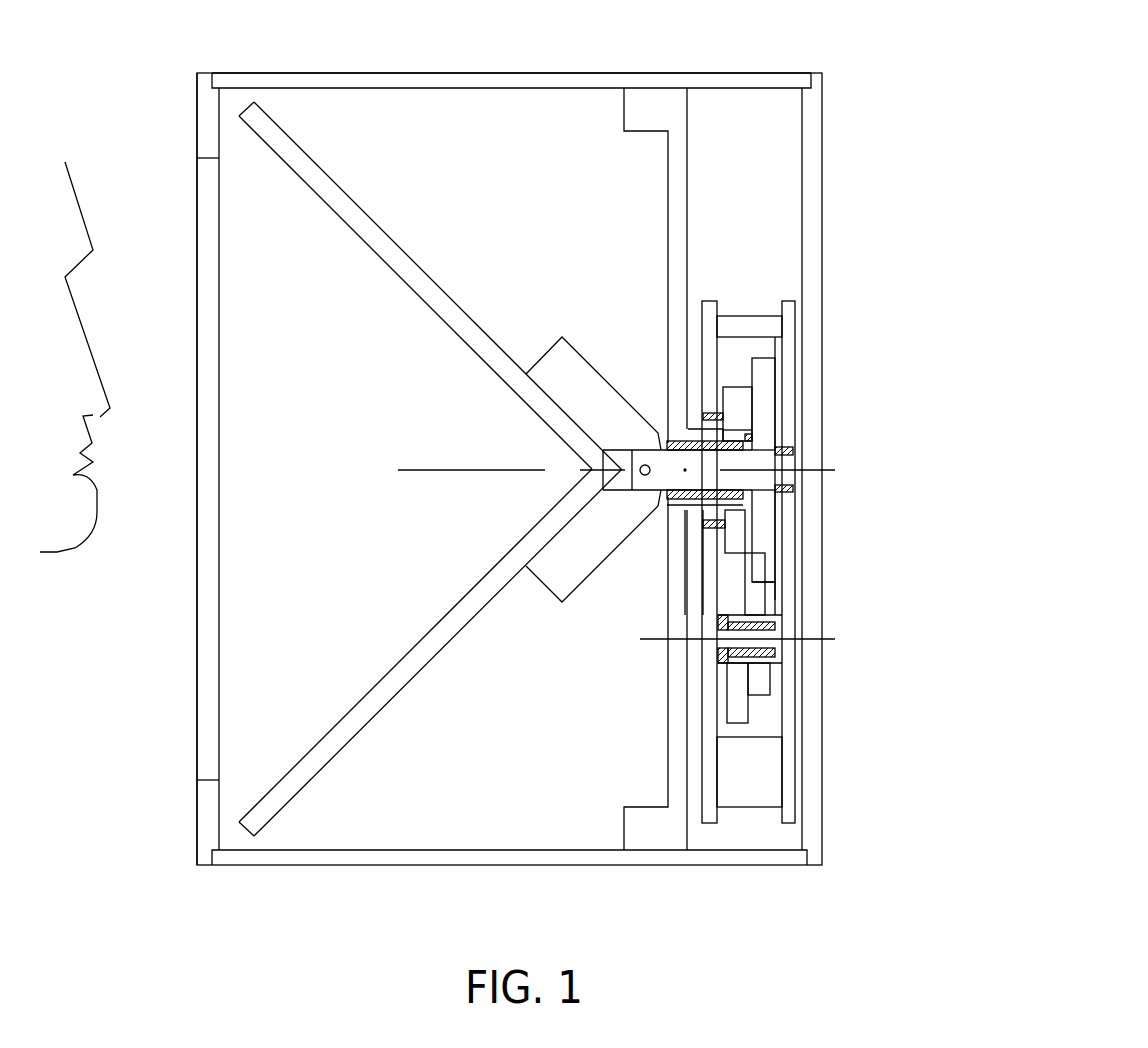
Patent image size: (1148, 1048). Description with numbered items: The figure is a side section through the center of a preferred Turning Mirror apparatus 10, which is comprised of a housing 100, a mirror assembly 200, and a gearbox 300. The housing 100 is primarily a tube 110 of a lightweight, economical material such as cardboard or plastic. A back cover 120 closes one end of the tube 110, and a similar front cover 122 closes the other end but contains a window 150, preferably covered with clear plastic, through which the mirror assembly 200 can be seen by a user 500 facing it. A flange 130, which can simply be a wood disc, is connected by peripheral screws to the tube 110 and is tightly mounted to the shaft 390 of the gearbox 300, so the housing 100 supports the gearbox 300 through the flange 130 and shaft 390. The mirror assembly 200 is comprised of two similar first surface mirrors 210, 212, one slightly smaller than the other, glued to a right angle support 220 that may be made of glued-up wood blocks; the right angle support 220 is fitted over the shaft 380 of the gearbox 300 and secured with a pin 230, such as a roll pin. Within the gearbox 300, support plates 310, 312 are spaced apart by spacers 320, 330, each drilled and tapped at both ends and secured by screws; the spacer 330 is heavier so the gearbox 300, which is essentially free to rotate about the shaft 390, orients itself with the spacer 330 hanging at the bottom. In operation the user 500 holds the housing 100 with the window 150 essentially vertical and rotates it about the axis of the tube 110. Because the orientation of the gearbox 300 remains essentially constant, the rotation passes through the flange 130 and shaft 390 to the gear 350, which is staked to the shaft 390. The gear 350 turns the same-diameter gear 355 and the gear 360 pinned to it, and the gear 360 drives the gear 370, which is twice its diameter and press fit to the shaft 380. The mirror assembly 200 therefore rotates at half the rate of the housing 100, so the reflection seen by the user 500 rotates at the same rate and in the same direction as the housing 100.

The Turning Mirror apparatus 10 is at (667, 37).
The housing 100 is at (318, 43).
The tube 110 is at (548, 72).
The back cover 120 is at (802, 132).
The front cover 122 is at (215, 158).
The flange 130 is at (616, 120).
The window 150 is at (202, 668).
The mirror assembly 200 is at (455, 680).
The first surface mirror 210 is at (450, 330).
The first surface mirror 212 is at (405, 640).
The right angle support 220 is at (607, 373).
The pin 230 is at (641, 464).
The gearbox 300 is at (745, 175).
The support plate 310 is at (711, 292).
The support plate 312 is at (790, 293).
The spacer 320 is at (743, 338).
The spacer 330 is at (742, 807).
The gear 350 is at (733, 387).
The gear 355 is at (742, 705).
The gear 360 is at (770, 590).
The gear 370 is at (778, 567).
The shaft 380 is at (767, 487).
The shaft 390 is at (733, 430).
The user 500 is at (105, 172).